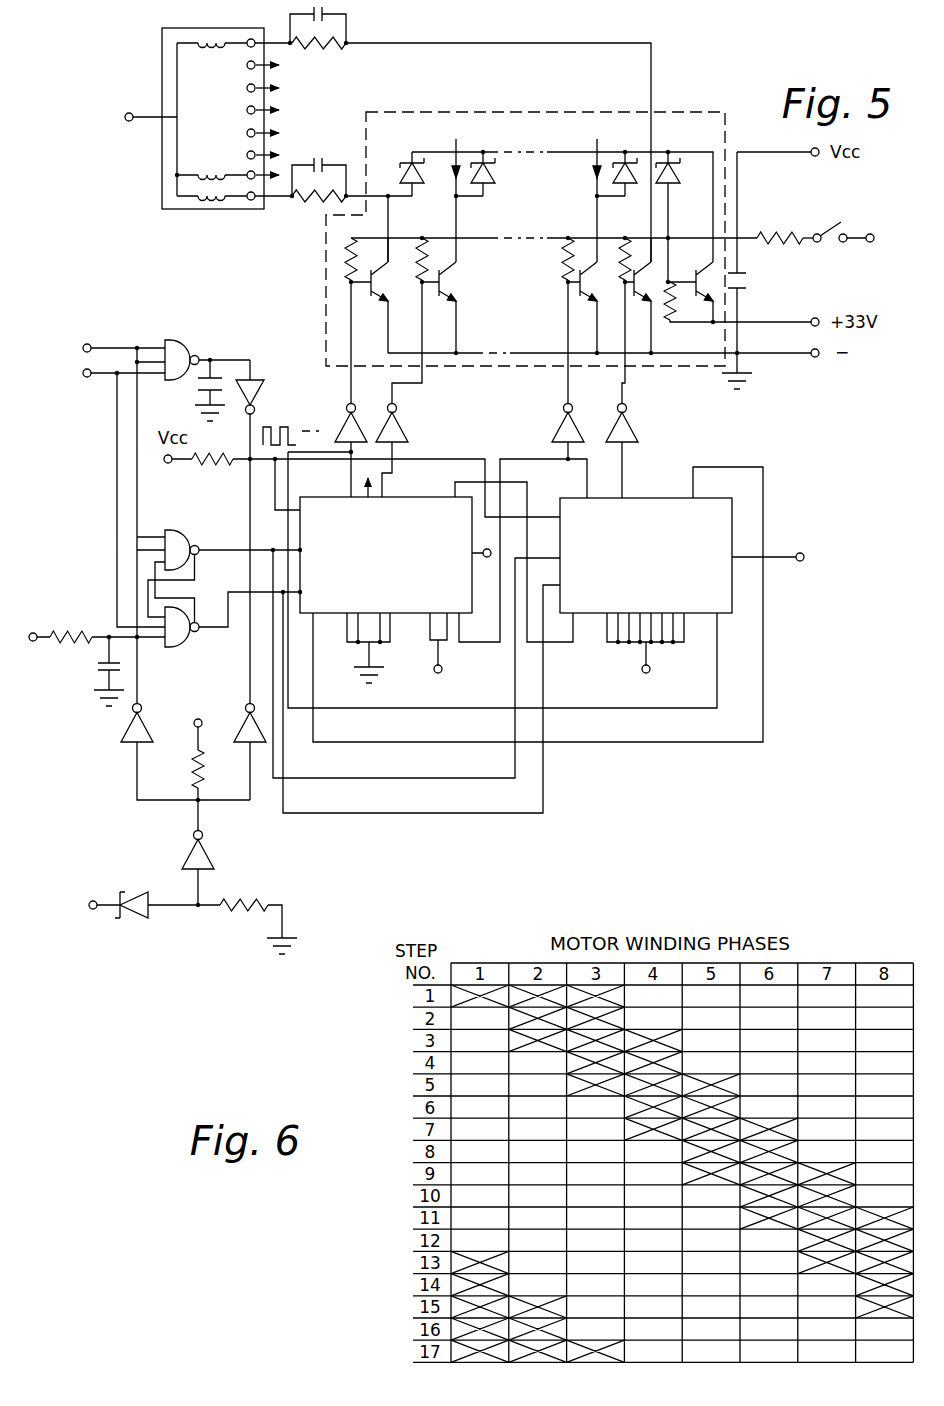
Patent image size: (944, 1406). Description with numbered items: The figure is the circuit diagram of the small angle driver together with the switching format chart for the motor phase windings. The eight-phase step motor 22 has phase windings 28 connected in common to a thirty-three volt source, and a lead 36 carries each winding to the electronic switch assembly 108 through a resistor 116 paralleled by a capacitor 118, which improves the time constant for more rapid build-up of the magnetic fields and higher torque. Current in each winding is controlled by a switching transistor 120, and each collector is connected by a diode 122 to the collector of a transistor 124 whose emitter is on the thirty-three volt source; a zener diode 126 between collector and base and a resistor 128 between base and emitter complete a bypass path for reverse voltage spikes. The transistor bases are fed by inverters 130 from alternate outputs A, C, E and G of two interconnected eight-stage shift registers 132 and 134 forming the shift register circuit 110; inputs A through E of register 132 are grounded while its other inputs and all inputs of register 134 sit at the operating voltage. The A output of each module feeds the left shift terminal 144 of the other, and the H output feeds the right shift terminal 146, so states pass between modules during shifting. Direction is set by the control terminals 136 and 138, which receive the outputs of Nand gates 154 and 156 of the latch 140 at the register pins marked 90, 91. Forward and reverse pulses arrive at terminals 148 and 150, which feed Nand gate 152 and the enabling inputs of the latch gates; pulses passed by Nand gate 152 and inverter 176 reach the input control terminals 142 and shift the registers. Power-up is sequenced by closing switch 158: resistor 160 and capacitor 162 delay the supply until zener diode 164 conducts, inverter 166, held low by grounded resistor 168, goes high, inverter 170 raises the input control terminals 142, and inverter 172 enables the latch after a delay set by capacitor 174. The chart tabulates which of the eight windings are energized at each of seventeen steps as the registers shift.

The step motor 22 is at (157, 176).
The phase windings 28 is at (207, 39).
The winding connection line 36 is at (545, 0).
The electronic switch assembly 108 is at (683, 108).
The shift register circuit 110 is at (778, 666).
The resistor 116 is at (310, 202).
The capacitor 118 is at (318, 156).
The switching transistor 120 is at (356, 300).
The diode 122 is at (401, 176).
The transistor 124 is at (705, 306).
The zener diode 126 is at (676, 170).
The resistor 128 is at (672, 305).
The inverter 130 is at (338, 426).
The shift register 132 is at (415, 495).
The shift register 134 is at (627, 497).
The control terminal 136 is at (296, 553).
The control terminal 138 is at (296, 596).
The latch 140 is at (151, 519).
The input control terminal 142 is at (299, 509).
The left shift terminal 144 is at (459, 615).
The right shift terminal 146 is at (316, 615).
The terminal 148 is at (107, 344).
The terminal 150 is at (88, 379).
The Nand gate 152 is at (181, 341).
The Nand gate 154 is at (186, 530).
The Nand gate 156 is at (177, 650).
The switch 158 is at (829, 243).
The resistor 160 is at (778, 233).
The capacitor 162 is at (749, 276).
The zener diode 164 is at (122, 925).
The inverter 166 is at (213, 855).
The resistor 168 is at (245, 915).
The inverter 170 is at (209, 749).
The inverter 172 is at (120, 733).
The capacitor 174 is at (95, 668).
The inverter 176 is at (263, 393).
The shift register input 90 is at (416, 661).
The shift register input 91 is at (421, 695).